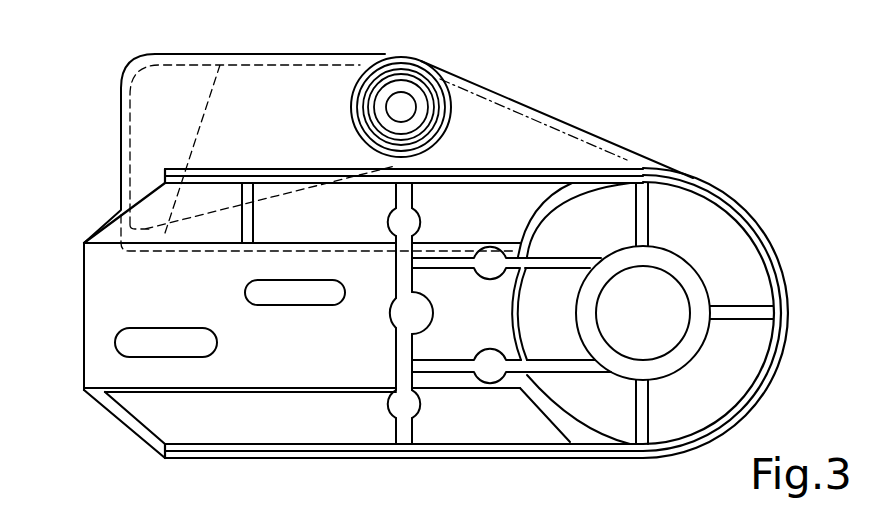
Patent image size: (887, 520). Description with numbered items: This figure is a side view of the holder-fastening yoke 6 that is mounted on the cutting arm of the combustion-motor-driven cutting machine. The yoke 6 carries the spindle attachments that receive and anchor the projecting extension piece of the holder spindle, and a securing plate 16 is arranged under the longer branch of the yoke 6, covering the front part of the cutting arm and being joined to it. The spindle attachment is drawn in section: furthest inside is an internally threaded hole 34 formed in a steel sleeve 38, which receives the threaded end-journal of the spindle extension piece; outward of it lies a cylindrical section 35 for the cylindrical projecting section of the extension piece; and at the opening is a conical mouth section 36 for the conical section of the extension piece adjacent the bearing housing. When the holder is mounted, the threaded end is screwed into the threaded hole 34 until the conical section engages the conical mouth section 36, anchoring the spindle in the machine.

The holder-fastening yoke 6 is at (153, 50).
The securing plate 16 is at (92, 276).
The internally threaded hole 34 is at (415, 85).
The cylindrical section 35 is at (420, 122).
The conical mouth section 36 is at (395, 78).
The steel sleeve 38 is at (368, 75).